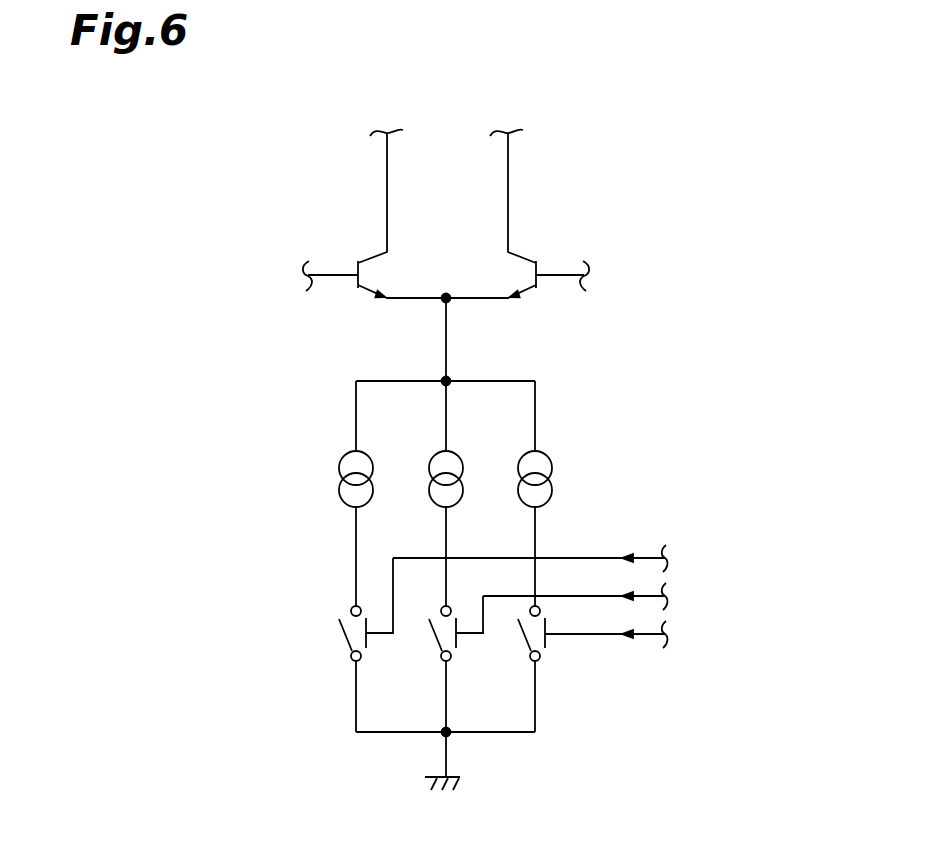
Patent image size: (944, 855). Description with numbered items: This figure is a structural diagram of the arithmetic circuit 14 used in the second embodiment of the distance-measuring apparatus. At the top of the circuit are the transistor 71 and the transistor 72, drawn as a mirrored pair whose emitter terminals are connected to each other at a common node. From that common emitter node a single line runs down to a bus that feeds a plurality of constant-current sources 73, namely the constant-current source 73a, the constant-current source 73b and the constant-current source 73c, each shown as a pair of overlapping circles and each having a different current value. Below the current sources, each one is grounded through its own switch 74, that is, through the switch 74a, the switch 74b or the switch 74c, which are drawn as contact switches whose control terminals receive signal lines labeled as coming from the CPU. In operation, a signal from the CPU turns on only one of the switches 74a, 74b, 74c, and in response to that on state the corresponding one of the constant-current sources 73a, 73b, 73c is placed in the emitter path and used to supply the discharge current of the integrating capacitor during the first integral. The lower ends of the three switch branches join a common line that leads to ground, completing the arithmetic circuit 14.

The arithmetic circuit 14 is at (618, 156).
The transistor 71 is at (542, 293).
The transistor 72 is at (351, 293).
The constant-current sources 73 is at (492, 504).
The constant-current source 73a is at (369, 456).
The constant-current source 73b is at (459, 456).
The constant-current source 73c is at (549, 456).
The switch 74 is at (468, 636).
The switch 74a is at (353, 661).
The switch 74b is at (443, 661).
The switch 74c is at (532, 661).